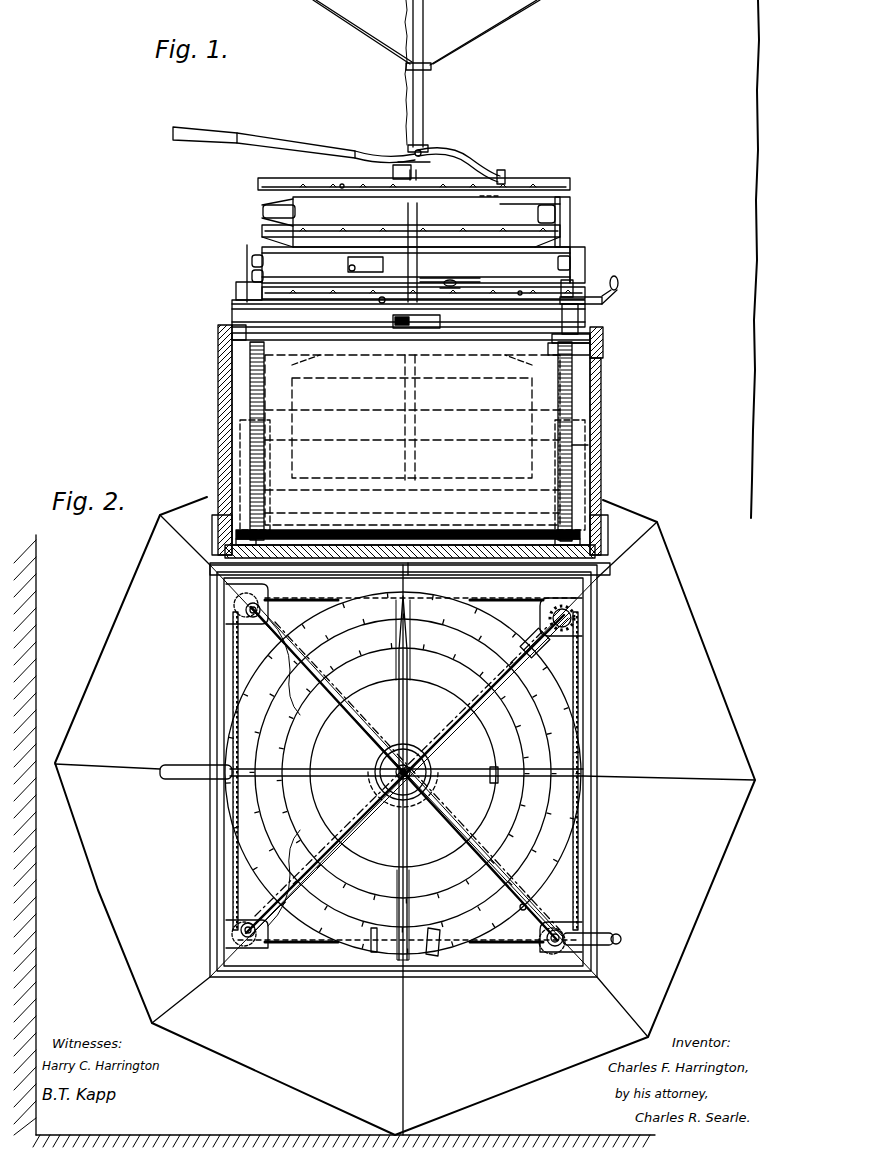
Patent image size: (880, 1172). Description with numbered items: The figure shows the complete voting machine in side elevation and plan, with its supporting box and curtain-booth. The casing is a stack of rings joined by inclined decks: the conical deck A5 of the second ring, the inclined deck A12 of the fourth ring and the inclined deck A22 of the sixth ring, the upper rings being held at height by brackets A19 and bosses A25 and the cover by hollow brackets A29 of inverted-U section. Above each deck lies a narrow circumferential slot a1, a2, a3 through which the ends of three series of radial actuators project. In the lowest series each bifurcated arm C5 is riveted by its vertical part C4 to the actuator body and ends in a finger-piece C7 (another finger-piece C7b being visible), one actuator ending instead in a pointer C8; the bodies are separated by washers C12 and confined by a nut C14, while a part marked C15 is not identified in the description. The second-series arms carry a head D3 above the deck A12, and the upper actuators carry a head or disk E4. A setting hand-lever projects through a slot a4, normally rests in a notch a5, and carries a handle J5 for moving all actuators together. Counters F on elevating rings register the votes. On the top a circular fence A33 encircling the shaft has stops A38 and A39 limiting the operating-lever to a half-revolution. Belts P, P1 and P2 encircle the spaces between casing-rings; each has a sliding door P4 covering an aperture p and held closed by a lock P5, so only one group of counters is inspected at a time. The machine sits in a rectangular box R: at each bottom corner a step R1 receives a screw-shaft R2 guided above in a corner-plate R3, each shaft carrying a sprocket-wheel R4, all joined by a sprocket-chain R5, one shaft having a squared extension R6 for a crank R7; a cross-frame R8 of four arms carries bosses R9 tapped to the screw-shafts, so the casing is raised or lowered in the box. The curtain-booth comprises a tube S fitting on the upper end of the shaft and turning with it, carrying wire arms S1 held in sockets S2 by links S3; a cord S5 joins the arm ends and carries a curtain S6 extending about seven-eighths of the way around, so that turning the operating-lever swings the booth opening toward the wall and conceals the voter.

In FIG. 1, the tube S is at (424, 92).
In FIG. 2, the tube S is at (410, 750).
In FIG. 1, the arms S1 is at (488, 32).
In FIG. 2, the arms S1 is at (714, 779).
In FIG. 1, the sockets S2 is at (428, 60).
In FIG. 2, the links S3 is at (464, 795).
In FIG. 2, the cord or wire S5 is at (182, 506).
In FIG. 1, the curtain S6 is at (755, 186).
In FIG. 2, the curtain S6 is at (100, 646).
In FIG. 1, the hand lever C15 is at (289, 145).
In FIG. 1, the vertical part of bifurcated arm C4 is at (365, 152).
In FIG. 1, the bifurcated arm C5 is at (500, 168).
In FIG. 2, the bifurcated arm C5 is at (490, 770).
In FIG. 1, the finger-piece C7 is at (425, 148).
In FIG. 2, the finger-piece C7 is at (557, 742).
In FIG. 1, the finger-piece C7b is at (498, 293).
In FIG. 1, the index or pointer C8 is at (379, 302).
In FIG. 2, the washers C12 is at (370, 932).
In FIG. 2, the nut C14 is at (340, 780).
In FIG. 1, the stop A39 is at (397, 163).
In FIG. 2, the stop A39 is at (372, 766).
In FIG. 1, the stop A38 is at (455, 150).
In FIG. 2, the stop A38 is at (428, 766).
In FIG. 1, the circular fence or flange A33 is at (414, 171).
In FIG. 2, the circular fence or flange A33 is at (362, 840).
In FIG. 2, the hollow brackets A29 is at (408, 640).
In FIG. 2, the bosses A25 is at (425, 707).
In FIG. 1, the inclined deck A22 is at (515, 204).
In FIG. 2, the inclined deck A22 is at (403, 773).
In FIG. 1, the brackets A19 is at (397, 185).
In FIG. 1, the inclined deck A12 is at (545, 243).
In FIG. 2, the inclined deck A12 is at (403, 773).
In FIG. 1, the conical deck A5 is at (245, 298).
In FIG. 2, the conical deck A5 is at (403, 773).
In FIG. 1, the head or disk E4 is at (503, 196).
In FIG. 2, the head or disk E4 is at (462, 695).
In FIG. 1, the disk or head D3 is at (560, 224).
In FIG. 2, the disk or head D3 is at (528, 748).
In FIG. 1, the belt or band P is at (240, 320).
In FIG. 1, the belt or band P1 is at (275, 260).
In FIG. 1, the belt or band P2 is at (297, 212).
In FIG. 1, the sliding door P4 is at (383, 268).
In FIG. 1, the lock P5 is at (349, 266).
In FIG. 1, the aperture p is at (394, 321).
In FIG. 1, the circumferential slot a1 is at (423, 288).
In FIG. 1, the circumferential slot a2 is at (333, 230).
In FIG. 1, the circumferential slot a3 is at (342, 182).
In FIG. 1, the slot a4 is at (450, 268).
In FIG. 1, the notch a5 is at (451, 270).
In FIG. 1, the handle J5 is at (455, 286).
In FIG. 2, the handle J5 is at (441, 940).
In FIG. 1, the box or receptacle R is at (413, 450).
In FIG. 2, the box or receptacle R is at (598, 695).
In FIG. 1, the step R1 is at (540, 533).
In FIG. 1, the screw-shaft R2 is at (556, 445).
In FIG. 1, the corner-plate R3 is at (604, 338).
In FIG. 1, the sprocket-wheel R4 is at (585, 528).
In FIG. 2, the sprocket-wheel R4 is at (575, 622).
In FIG. 1, the sprocket-chain R5 is at (415, 530).
In FIG. 2, the sprocket-chain R5 is at (580, 660).
In FIG. 1, the squared extension R6 is at (580, 318).
In FIG. 1, the wrench or crank R7 is at (619, 290).
In FIG. 2, the wrench or crank R7 is at (600, 933).
In FIG. 1, the cross-frame R8 is at (470, 335).
In FIG. 2, the cross-frame R8 is at (532, 904).
In FIG. 1, the boss R9 is at (604, 352).
In FIG. 1, the counters F is at (400, 330).